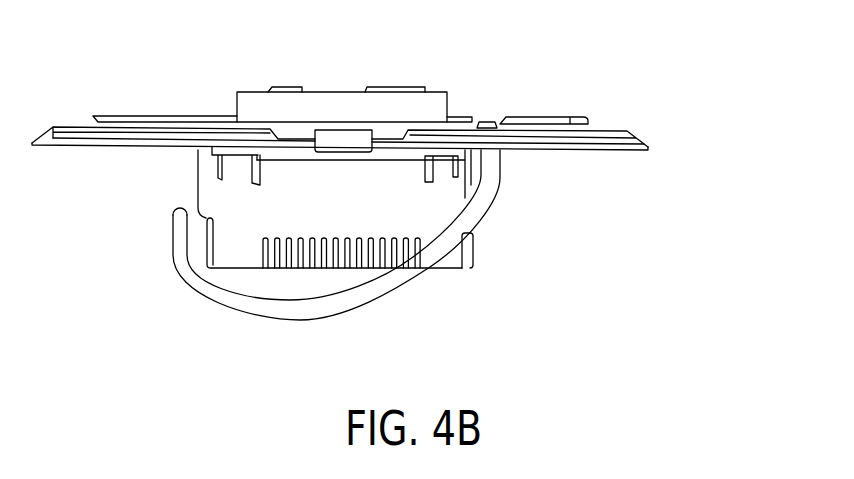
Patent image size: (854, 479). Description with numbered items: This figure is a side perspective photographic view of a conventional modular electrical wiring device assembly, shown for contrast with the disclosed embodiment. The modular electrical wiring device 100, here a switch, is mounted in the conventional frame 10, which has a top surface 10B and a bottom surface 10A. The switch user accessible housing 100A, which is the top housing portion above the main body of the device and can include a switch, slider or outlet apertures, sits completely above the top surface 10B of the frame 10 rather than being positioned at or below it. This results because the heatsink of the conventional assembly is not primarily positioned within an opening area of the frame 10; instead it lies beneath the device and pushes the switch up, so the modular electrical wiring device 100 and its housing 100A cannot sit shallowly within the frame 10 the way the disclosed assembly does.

The modular electrical wiring device 100 is at (250, 207).
The switch user accessible housing 100A is at (245, 110).
The frame 10 is at (537, 142).
The bottom surface of the frame 10A is at (490, 134).
The top surface of the frame 10B is at (493, 128).
The heat sink heatsink is at (567, 128).